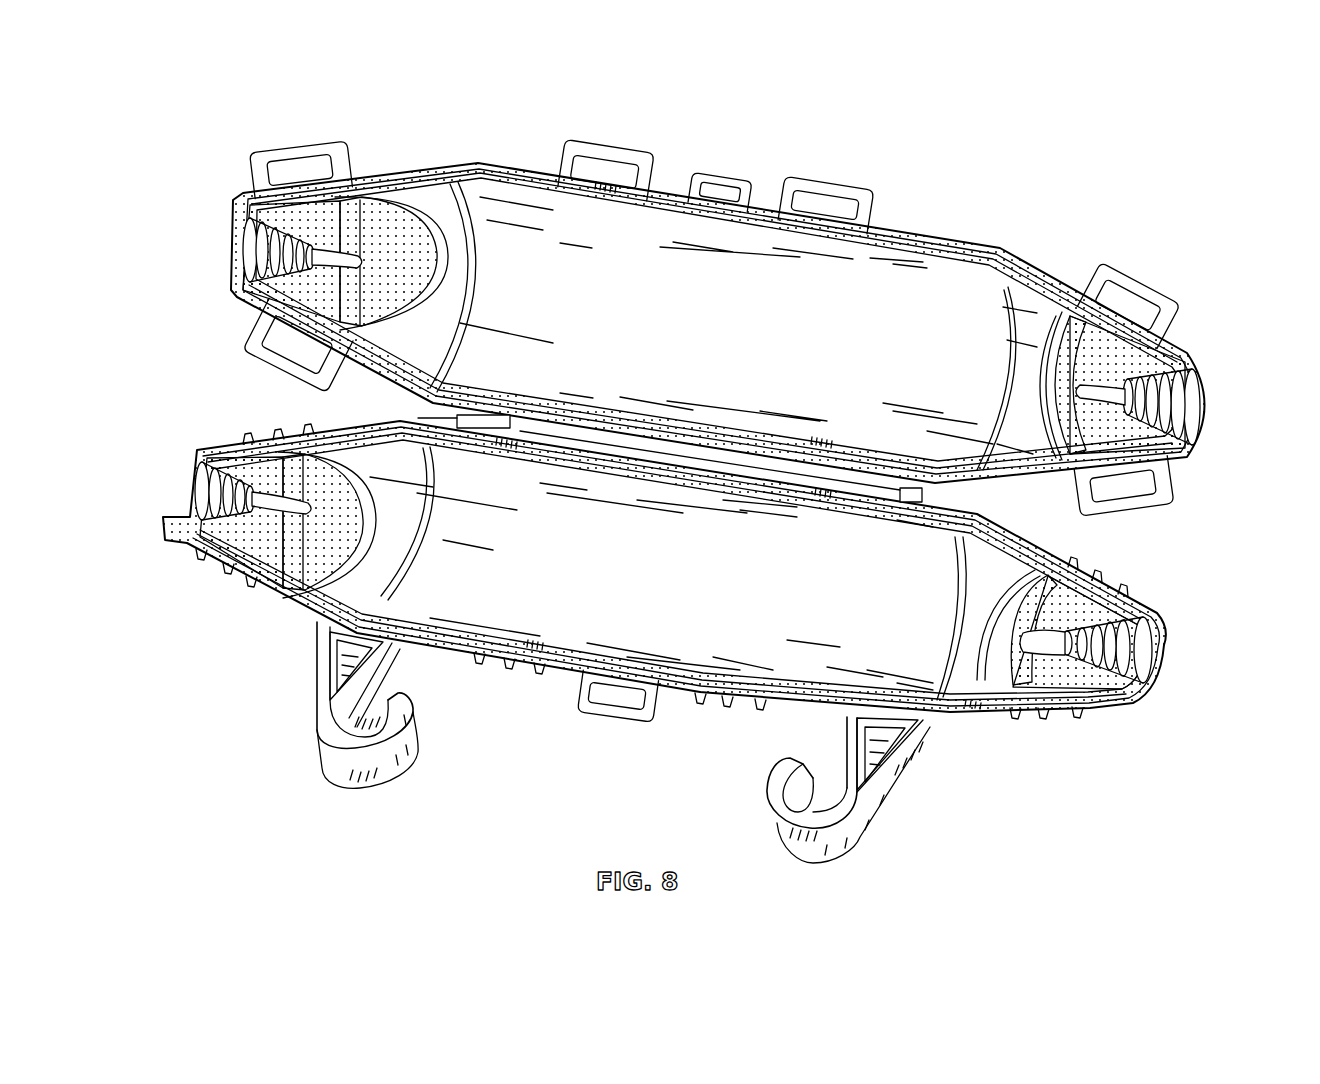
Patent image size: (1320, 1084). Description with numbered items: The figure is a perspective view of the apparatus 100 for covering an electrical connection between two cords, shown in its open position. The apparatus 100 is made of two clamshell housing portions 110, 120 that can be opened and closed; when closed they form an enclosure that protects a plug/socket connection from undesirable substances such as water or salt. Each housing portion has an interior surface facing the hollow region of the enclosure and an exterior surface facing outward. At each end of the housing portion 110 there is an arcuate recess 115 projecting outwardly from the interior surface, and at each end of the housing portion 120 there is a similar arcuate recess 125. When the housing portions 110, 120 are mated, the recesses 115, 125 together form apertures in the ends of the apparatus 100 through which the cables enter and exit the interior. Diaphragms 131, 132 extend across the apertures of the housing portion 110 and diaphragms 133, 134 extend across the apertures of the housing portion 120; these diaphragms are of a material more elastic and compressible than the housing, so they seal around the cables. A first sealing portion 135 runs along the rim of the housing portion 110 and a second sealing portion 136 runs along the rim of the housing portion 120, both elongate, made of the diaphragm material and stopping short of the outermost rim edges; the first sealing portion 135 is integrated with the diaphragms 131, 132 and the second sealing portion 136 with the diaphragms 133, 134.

The apparatus 100 is at (706, 497).
The housing portion 110 is at (712, 323).
The housing portion 120 is at (696, 633).
The recess 115 is at (245, 252).
The recess 125 is at (197, 490).
The diaphragm 131 is at (287, 216).
The diaphragm 132 is at (1121, 357).
The diaphragm 133 is at (229, 536).
The diaphragm 134 is at (1079, 678).
The first sealing portion 135 is at (527, 178).
The second sealing portion 136 is at (1062, 566).